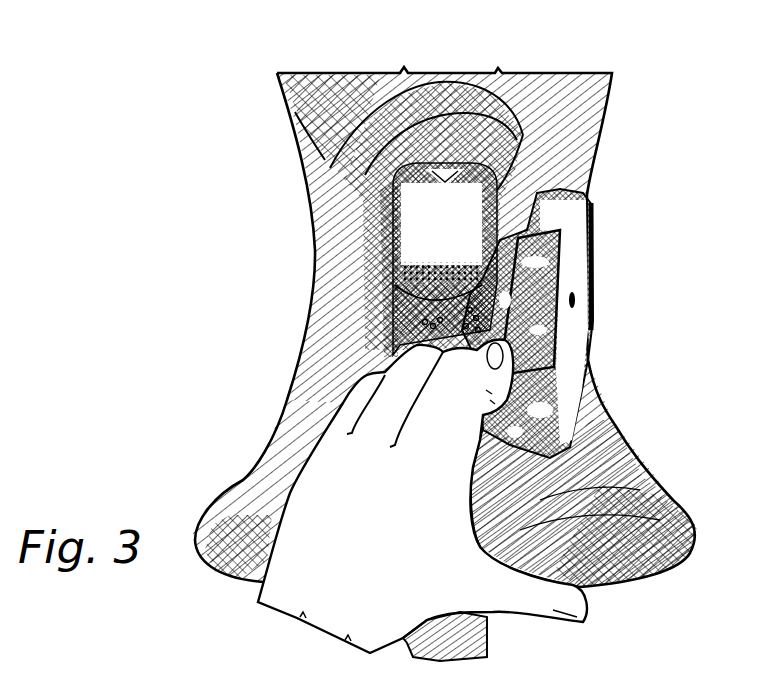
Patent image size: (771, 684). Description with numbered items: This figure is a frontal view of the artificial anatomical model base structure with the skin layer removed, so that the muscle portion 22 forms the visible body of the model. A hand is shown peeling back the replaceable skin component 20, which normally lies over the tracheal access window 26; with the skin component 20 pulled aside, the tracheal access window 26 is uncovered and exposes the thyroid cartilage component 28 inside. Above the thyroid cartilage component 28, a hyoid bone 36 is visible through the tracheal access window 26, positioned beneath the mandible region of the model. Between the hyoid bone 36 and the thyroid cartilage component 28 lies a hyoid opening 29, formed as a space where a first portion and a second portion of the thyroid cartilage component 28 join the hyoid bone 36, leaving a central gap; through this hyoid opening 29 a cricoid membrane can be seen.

The replaceable skin component 20 is at (590, 203).
The muscle portion 22 is at (300, 108).
The tracheal access window 26 is at (483, 123).
The thyroid cartilage component 28 is at (378, 320).
The hyoid opening 29 is at (387, 272).
The hyoid bone 36 is at (463, 238).